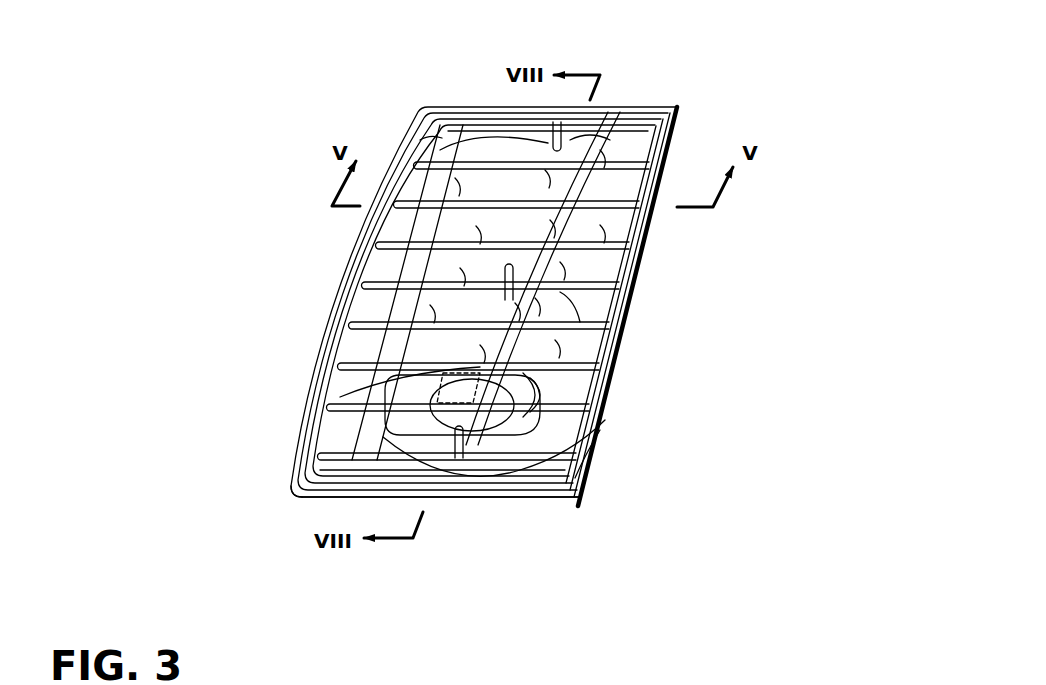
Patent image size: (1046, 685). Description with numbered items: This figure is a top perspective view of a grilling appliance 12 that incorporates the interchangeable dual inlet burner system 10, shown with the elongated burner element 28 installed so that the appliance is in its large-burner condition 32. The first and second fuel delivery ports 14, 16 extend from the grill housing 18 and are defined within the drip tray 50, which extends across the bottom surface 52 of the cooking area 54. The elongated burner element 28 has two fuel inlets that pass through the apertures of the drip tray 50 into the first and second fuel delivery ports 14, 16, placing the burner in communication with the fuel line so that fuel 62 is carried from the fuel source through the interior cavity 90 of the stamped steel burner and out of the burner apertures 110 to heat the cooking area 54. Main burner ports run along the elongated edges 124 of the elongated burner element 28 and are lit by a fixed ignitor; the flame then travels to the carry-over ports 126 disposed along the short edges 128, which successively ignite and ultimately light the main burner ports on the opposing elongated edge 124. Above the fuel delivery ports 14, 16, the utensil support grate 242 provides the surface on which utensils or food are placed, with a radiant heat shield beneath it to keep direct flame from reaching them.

The interchangeable dual inlet burner system 10 is at (481, 86).
The grilling appliance 12 is at (236, 155).
The first fuel delivery port 14 is at (647, 206).
The second fuel delivery port 16 is at (540, 390).
The grill housing 18 is at (523, 498).
The elongated burner element 28 is at (450, 295).
The large-burner condition 32 is at (391, 144).
The drip tray 50 is at (607, 262).
The bottom surface 52 is at (397, 387).
The cooking area 54 is at (600, 149).
The fuel 62 is at (437, 440).
The interior cavity 90 is at (597, 130).
The burner apertures 110 is at (588, 484).
The elongated edges 124 is at (552, 293).
The carry-over ports 126 is at (290, 488).
The short edges 128 is at (553, 150).
The utensil support grate 242 is at (600, 430).